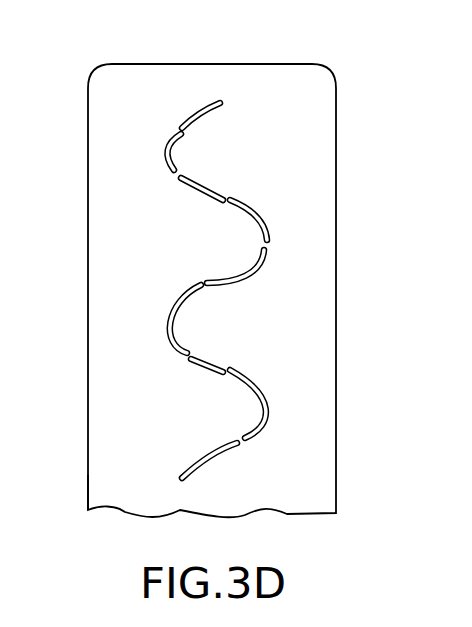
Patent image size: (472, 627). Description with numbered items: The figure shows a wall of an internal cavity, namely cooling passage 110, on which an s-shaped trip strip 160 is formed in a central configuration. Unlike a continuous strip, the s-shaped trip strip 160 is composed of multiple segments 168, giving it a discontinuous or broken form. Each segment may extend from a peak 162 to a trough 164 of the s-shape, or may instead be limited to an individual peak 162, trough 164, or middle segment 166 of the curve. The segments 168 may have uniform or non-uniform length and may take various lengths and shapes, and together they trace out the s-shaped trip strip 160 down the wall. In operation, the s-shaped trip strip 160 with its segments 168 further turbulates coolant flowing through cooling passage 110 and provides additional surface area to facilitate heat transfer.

The cooling passage 110 is at (318, 177).
The s-shaped trip strip 160 is at (211, 246).
The peak 162 is at (167, 150).
The trough 164 is at (270, 232).
The middle segment 166 is at (213, 190).
The segments 168 is at (207, 361).